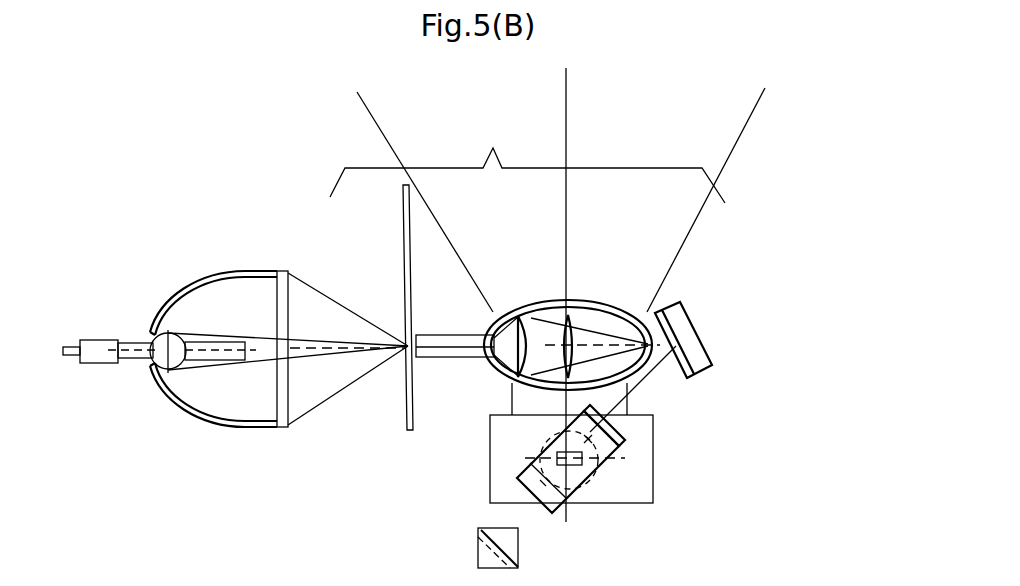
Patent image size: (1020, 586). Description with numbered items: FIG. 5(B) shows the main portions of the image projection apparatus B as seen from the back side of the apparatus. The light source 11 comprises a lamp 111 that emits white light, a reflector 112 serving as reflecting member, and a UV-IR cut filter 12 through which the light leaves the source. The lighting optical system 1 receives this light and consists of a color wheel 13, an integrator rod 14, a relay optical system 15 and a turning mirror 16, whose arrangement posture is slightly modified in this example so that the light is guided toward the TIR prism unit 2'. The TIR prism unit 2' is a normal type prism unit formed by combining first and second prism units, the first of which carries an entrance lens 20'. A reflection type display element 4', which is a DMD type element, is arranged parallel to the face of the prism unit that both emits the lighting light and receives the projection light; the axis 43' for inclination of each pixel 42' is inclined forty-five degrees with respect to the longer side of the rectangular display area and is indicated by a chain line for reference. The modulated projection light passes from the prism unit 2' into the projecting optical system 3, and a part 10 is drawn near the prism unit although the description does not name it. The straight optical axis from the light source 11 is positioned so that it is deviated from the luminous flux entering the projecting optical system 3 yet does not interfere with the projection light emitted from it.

The lighting optical system 1 is at (527, 160).
The light source 11 is at (222, 206).
The lamp 111 is at (154, 333).
The reflector 112 is at (197, 283).
The UV-IR cut filter 12 is at (280, 270).
The color wheel 13 is at (403, 216).
The integrator rod 14 is at (453, 335).
The relay optical system 15 is at (572, 335).
The turning mirror 16 is at (696, 333).
The detection unit 10 is at (676, 433).
The projecting optical system 3 is at (664, 471).
The TIR prism unit 2' is at (523, 462).
The entrance lens 20' is at (632, 412).
The reflection type display element 4' is at (604, 500).
The axis for inclination 43' is at (471, 548).
The pixel 42' is at (526, 550).